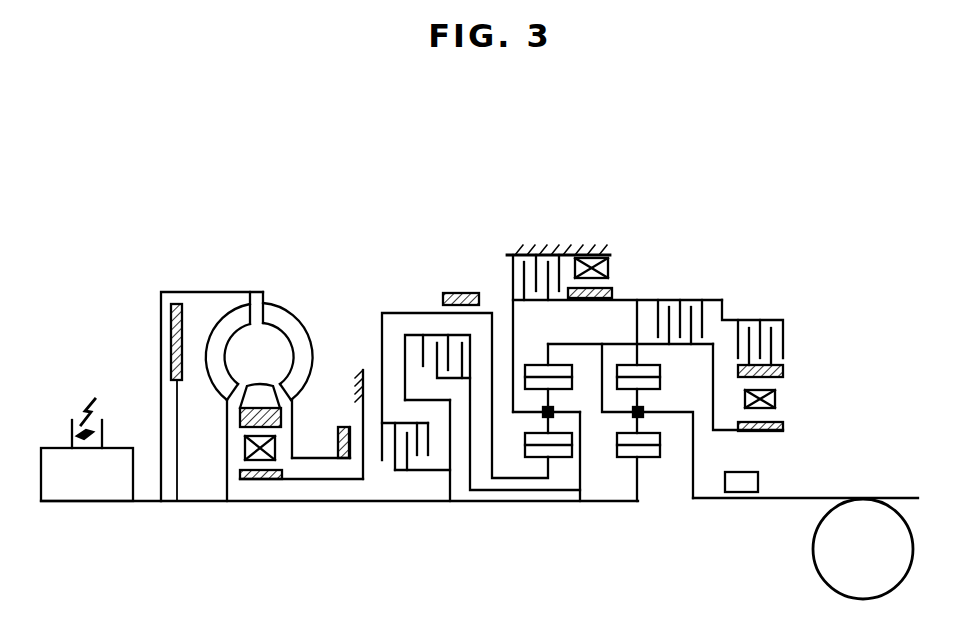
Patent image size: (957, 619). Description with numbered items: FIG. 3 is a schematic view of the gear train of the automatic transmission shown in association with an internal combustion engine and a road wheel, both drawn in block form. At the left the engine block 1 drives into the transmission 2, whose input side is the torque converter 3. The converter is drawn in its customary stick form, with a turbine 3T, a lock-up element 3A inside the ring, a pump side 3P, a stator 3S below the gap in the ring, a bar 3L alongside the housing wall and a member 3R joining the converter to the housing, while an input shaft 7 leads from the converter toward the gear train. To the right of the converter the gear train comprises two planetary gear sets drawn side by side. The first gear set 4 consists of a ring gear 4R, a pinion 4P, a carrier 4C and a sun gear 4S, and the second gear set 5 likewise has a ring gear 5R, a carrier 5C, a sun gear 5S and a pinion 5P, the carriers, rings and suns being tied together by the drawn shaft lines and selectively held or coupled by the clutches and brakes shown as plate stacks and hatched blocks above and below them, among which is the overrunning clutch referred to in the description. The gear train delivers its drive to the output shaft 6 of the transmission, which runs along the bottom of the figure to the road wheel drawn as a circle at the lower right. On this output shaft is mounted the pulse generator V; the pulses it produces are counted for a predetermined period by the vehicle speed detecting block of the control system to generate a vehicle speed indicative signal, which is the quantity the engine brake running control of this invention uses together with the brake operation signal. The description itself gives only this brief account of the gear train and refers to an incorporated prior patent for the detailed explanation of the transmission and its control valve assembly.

The engine 1 is at (147, 505).
The automatic transmission 2 is at (288, 505).
The torque converter 3 is at (219, 289).
The turbine 3T is at (222, 318).
The lock-up clutch 3A is at (273, 342).
The pump impeller 3P is at (308, 348).
The stator 3S is at (272, 387).
The lock-up piston 3L is at (170, 344).
The converter housing 3R is at (168, 413).
The front planetary gear set 4 is at (557, 463).
The front ring gear 4R is at (536, 365).
The front pinion gear 4P is at (570, 380).
The front carrier 4C is at (575, 411).
The front sun gear 4S is at (533, 458).
The rear planetary gear set 5 is at (648, 465).
The rear ring gear 5R is at (648, 373).
The rear carrier 5C is at (667, 412).
The rear sun gear 5S is at (630, 456).
The rear pinion gear 5P is at (662, 441).
The output shaft 6 is at (780, 498).
The input shaft 7 is at (236, 455).
The pulse generator V is at (740, 472).